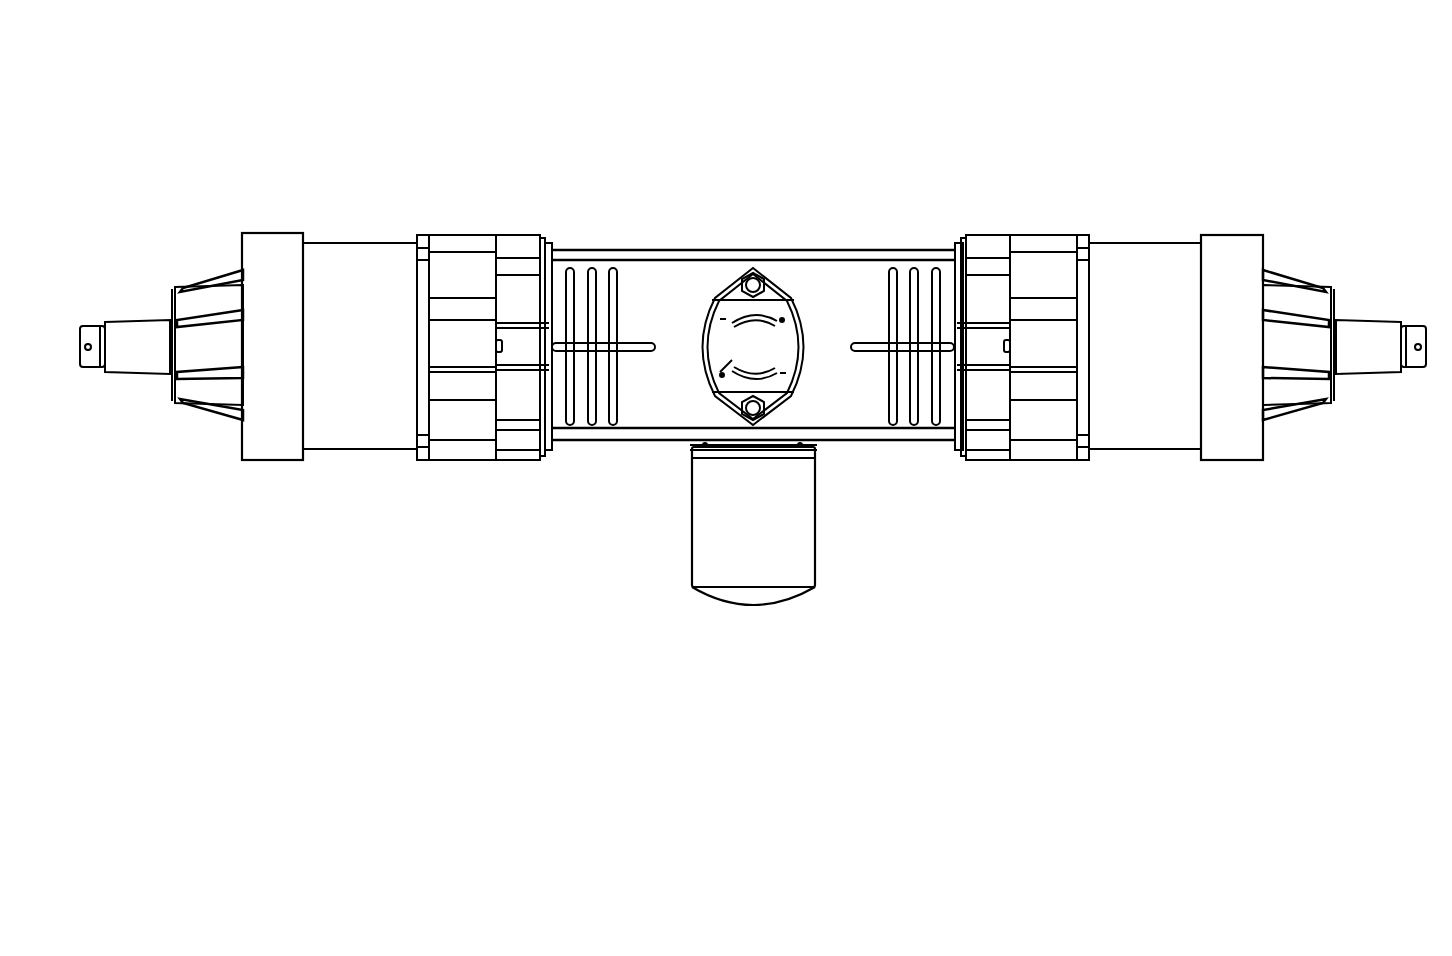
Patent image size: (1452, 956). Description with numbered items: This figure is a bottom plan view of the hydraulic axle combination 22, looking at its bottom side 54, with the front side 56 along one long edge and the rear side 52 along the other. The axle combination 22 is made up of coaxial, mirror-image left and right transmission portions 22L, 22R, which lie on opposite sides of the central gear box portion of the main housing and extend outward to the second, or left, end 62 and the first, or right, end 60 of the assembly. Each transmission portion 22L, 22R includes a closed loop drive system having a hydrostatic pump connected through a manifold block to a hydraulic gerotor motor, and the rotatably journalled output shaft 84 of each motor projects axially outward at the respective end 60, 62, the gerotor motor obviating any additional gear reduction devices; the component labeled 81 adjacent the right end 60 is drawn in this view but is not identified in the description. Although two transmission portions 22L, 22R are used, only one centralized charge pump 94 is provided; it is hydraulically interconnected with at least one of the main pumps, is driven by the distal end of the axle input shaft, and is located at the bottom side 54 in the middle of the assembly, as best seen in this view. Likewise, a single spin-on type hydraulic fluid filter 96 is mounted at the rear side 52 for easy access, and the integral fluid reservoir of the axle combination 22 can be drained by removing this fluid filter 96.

The axle combination 22 is at (812, 122).
The left transmission portion 22L is at (364, 210).
The right transmission portion 22R is at (1158, 205).
The rear side 52 is at (845, 447).
The bottom side 54 is at (840, 305).
The front side 56 is at (688, 250).
The first end 60 is at (1265, 247).
The second end 62 is at (237, 437).
The flange 81 is at (1232, 257).
The output shaft 84 is at (131, 355).
The charge pump 94 is at (770, 287).
The hydraulic fluid filter 96 is at (770, 573).